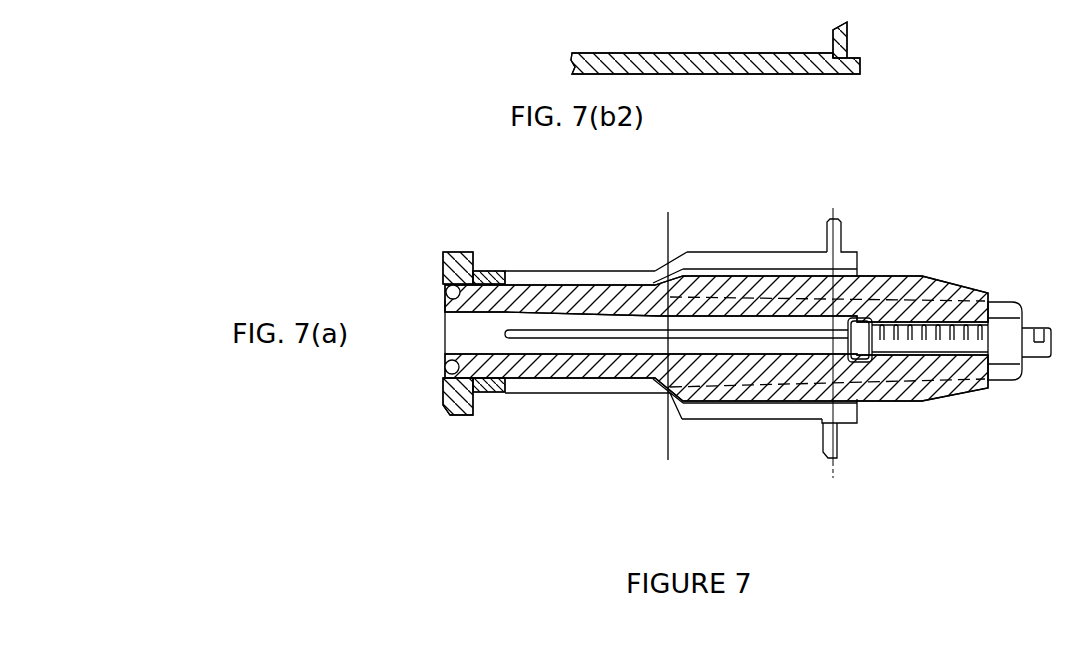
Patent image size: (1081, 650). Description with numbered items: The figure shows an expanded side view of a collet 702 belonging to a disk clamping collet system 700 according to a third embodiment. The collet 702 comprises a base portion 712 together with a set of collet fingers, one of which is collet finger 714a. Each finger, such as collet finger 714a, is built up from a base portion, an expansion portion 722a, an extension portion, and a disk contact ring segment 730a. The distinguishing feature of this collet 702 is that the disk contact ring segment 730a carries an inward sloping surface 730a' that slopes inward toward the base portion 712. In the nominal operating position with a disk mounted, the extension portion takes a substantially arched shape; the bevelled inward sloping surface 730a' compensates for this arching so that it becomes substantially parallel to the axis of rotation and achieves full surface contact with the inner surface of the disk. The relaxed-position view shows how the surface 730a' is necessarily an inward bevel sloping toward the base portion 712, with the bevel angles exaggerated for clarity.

The disk clamping collet system 700 is at (770, 485).
The collet 702 is at (455, 250).
The base portion 712 is at (478, 398).
The collet finger 714a is at (538, 280).
The expansion portion 722a is at (655, 270).
The disk contact ring segment 730a is at (868, 332).
The inward sloping surface 730a' is at (862, 330).